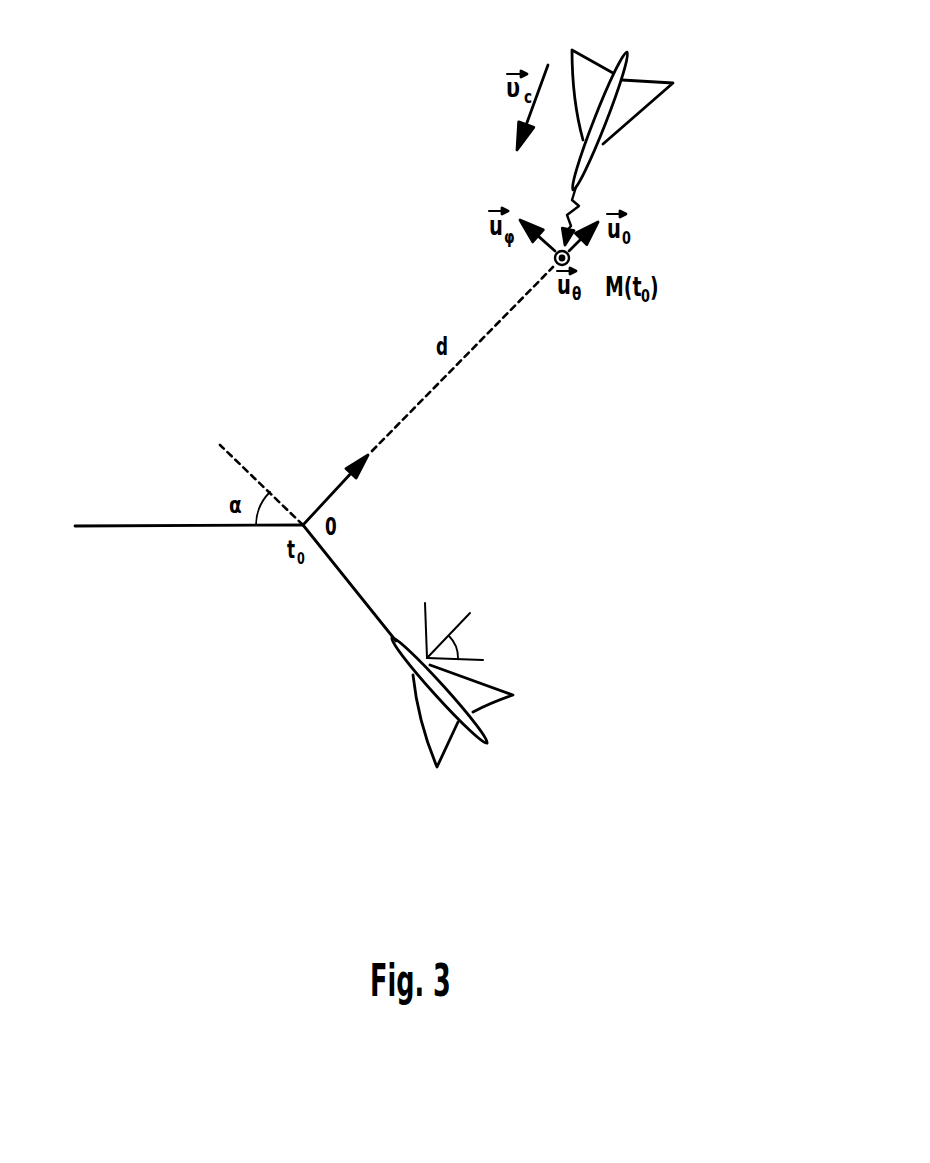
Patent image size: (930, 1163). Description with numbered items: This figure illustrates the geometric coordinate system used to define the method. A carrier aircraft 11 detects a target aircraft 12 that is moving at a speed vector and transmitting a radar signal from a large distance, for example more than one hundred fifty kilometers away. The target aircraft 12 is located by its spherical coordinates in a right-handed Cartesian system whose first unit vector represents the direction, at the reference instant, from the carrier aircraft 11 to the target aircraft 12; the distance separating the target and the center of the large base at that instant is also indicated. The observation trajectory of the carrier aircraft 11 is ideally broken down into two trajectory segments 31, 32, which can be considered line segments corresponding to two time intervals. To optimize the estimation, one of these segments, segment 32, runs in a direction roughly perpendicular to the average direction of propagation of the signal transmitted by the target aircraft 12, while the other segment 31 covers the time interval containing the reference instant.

The carrier aircraft 11 is at (455, 743).
The target aircraft 12 is at (650, 82).
The trajectory segment 31 is at (378, 597).
The trajectory segment 32 is at (93, 526).